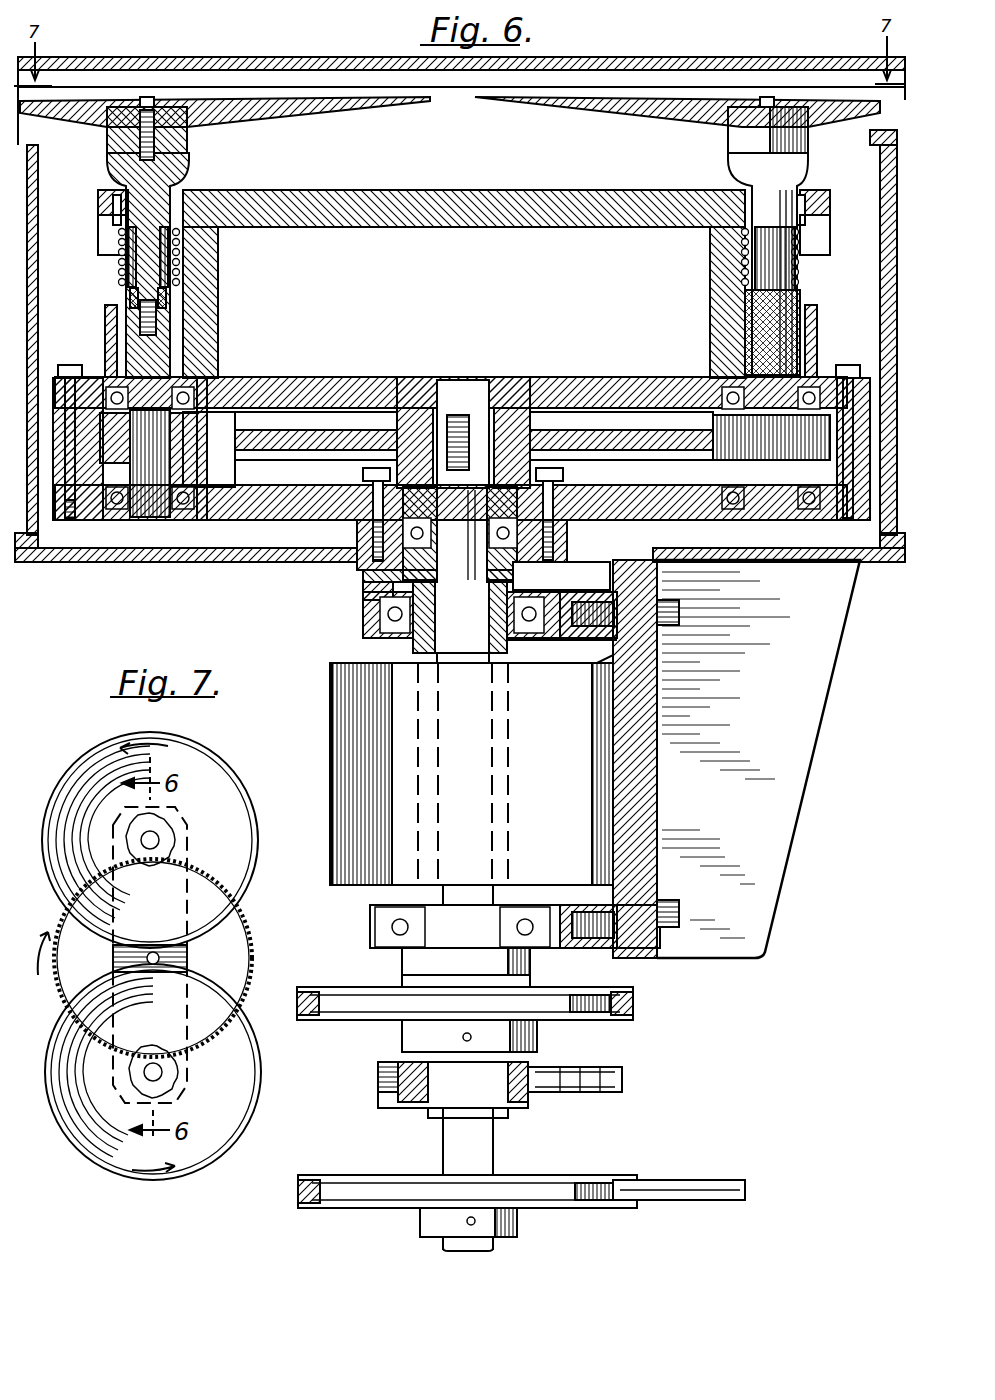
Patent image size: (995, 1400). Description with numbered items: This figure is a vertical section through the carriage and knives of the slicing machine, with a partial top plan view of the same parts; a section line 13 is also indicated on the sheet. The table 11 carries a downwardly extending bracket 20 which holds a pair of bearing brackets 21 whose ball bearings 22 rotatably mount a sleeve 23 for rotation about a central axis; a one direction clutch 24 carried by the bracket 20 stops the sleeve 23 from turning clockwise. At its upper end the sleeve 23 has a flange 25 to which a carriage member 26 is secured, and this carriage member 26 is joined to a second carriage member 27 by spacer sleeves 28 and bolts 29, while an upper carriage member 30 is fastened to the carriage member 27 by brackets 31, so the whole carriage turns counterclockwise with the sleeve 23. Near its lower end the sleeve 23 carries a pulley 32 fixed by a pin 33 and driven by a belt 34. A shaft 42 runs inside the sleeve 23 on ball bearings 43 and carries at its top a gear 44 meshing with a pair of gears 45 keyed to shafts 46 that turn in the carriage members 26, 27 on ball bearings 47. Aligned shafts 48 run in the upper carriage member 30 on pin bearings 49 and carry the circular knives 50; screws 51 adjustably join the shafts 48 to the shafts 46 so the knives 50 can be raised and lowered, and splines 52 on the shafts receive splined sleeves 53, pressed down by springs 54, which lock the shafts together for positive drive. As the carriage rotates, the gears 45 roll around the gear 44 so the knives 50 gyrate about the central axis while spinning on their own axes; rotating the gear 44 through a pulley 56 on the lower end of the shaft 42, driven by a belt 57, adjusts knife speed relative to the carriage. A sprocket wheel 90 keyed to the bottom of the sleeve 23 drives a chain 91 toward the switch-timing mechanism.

In FIG. 6, the table 11 is at (210, 560).
In FIG. 6, the top plate 13 is at (280, 57).
In FIG. 6, the bracket 20 is at (785, 820).
In FIG. 6, the bearing brackets 21 is at (575, 640).
In FIG. 6, the ball bearings 22 is at (363, 621).
In FIG. 6, the sleeve 23 is at (413, 648).
In FIG. 6, the one direction clutch 24 is at (352, 714).
In FIG. 6, the flange 25 is at (365, 578).
In FIG. 6, the carriage member 26 is at (270, 510).
In FIG. 6, the carriage member 27 is at (340, 377).
In FIG. 6, the spacer sleeves 28 is at (62, 365).
In FIG. 6, the bolts 29 is at (105, 330).
In FIG. 6, the upper carriage member 30 is at (372, 227).
In FIG. 7, the upper carriage member 30 is at (247, 876).
In FIG. 6, the brackets 31 is at (218, 355).
In FIG. 6, the pulley 32 is at (600, 1020).
In FIG. 6, the pin 33 is at (462, 1037).
In FIG. 6, the belt 34 is at (633, 1005).
In FIG. 6, the shaft 42 is at (420, 1148).
In FIG. 7, the shaft 42 is at (185, 960).
In FIG. 6, the ball bearings 43 is at (455, 675).
In FIG. 6, the gear 44 is at (400, 412).
In FIG. 7, the gear 44 is at (250, 920).
In FIG. 6, the gears 45 is at (205, 458).
In FIG. 7, the gears 45 is at (175, 838).
In FIG. 6, the shafts 46 is at (152, 517).
In FIG. 6, the ball bearings 47 is at (225, 372).
In FIG. 6, the shafts 48 is at (165, 186).
In FIG. 6, the pin bearings 49 is at (100, 200).
In FIG. 6, the circular knives 50 is at (318, 104).
In FIG. 7, the circular knives 50 is at (88, 762).
In FIG. 6, the screws 51 is at (160, 318).
In FIG. 6, the splines 52 is at (190, 262).
In FIG. 6, the splined sleeves 53 is at (180, 288).
In FIG. 6, the springs 54 is at (118, 270).
In FIG. 6, the pulley 56 is at (590, 1175).
In FIG. 6, the belt 57 is at (680, 1180).
In FIG. 6, the sprocket wheel 90 is at (395, 1098).
In FIG. 6, the chain 91 is at (622, 1078).